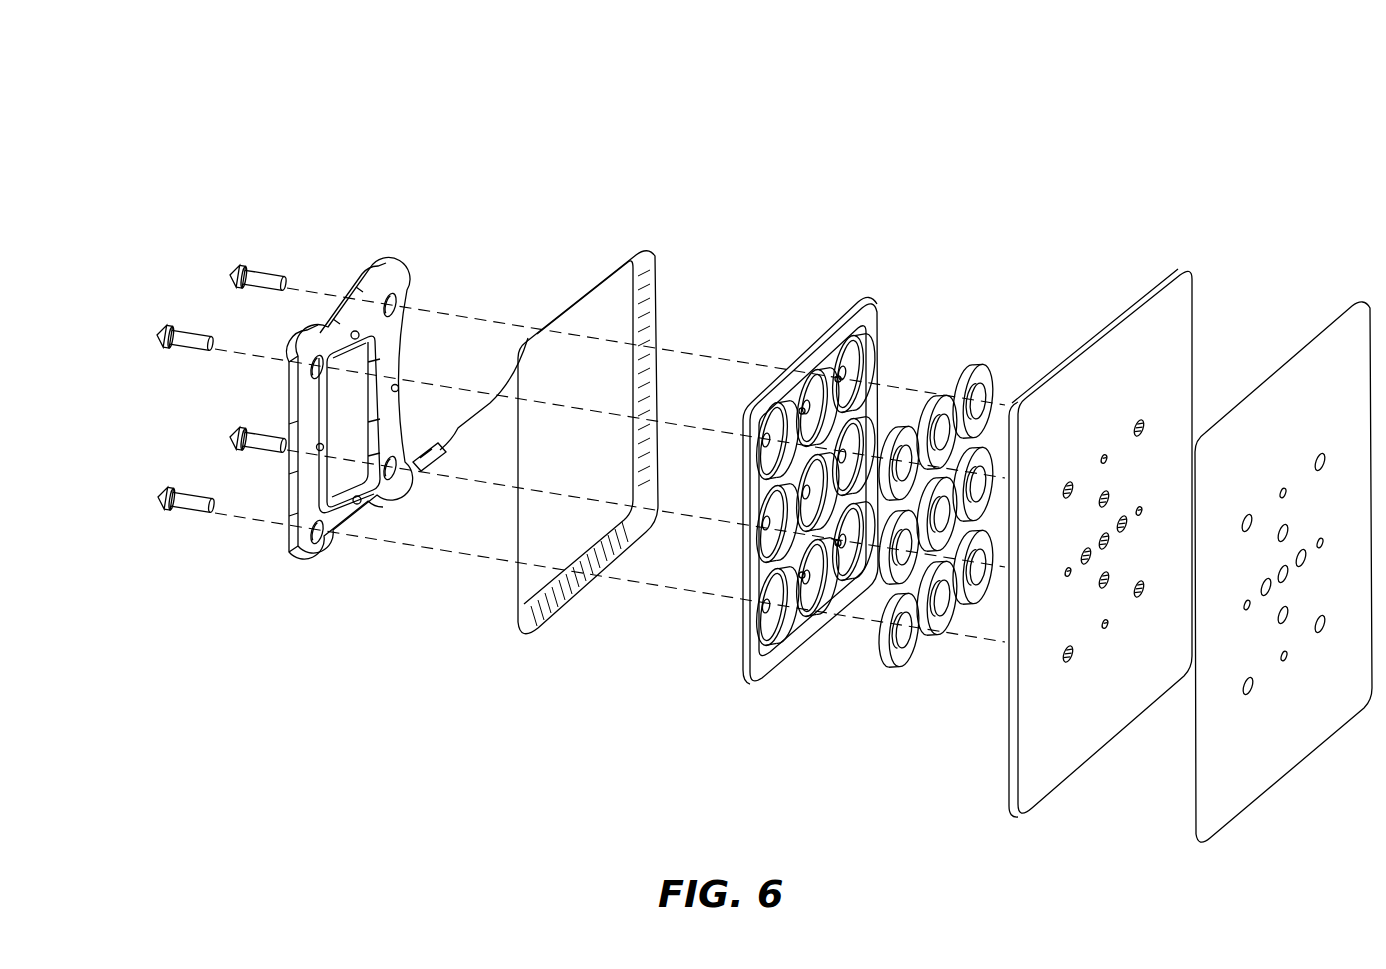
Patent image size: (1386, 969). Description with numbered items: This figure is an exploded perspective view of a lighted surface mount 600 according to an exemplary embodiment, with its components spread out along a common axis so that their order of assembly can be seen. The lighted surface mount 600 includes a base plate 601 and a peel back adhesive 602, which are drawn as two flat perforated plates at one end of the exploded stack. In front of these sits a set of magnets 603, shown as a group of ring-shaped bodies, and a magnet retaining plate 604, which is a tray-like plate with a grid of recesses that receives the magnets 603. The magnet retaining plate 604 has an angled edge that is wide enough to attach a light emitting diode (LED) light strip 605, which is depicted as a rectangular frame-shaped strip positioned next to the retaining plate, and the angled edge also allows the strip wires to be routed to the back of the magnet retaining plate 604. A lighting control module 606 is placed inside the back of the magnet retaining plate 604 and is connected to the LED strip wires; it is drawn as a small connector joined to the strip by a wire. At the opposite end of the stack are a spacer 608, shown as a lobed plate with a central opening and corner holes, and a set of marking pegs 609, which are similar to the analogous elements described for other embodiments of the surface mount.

The lighted surface mount 600 is at (238, 127).
The base plate 601 is at (1192, 277).
The peel back adhesive 602 is at (1333, 327).
The set of magnets 603 is at (986, 370).
The magnet retaining plate 604 is at (870, 305).
The light emitting diode (LED) light strip 605 is at (652, 247).
The lighting control module 606 is at (420, 473).
The spacer 608 is at (396, 268).
The marking pegs 609 is at (187, 513).